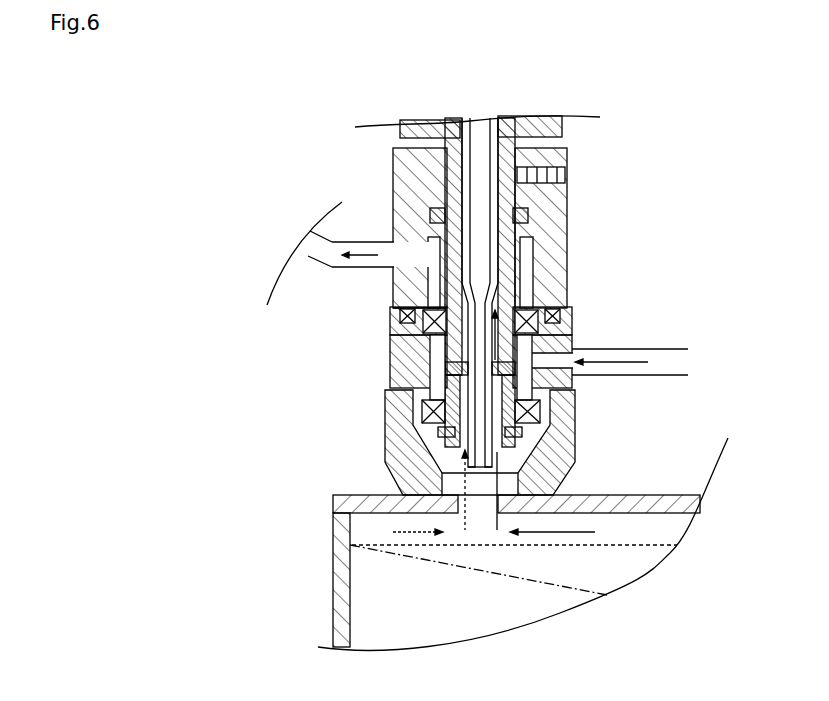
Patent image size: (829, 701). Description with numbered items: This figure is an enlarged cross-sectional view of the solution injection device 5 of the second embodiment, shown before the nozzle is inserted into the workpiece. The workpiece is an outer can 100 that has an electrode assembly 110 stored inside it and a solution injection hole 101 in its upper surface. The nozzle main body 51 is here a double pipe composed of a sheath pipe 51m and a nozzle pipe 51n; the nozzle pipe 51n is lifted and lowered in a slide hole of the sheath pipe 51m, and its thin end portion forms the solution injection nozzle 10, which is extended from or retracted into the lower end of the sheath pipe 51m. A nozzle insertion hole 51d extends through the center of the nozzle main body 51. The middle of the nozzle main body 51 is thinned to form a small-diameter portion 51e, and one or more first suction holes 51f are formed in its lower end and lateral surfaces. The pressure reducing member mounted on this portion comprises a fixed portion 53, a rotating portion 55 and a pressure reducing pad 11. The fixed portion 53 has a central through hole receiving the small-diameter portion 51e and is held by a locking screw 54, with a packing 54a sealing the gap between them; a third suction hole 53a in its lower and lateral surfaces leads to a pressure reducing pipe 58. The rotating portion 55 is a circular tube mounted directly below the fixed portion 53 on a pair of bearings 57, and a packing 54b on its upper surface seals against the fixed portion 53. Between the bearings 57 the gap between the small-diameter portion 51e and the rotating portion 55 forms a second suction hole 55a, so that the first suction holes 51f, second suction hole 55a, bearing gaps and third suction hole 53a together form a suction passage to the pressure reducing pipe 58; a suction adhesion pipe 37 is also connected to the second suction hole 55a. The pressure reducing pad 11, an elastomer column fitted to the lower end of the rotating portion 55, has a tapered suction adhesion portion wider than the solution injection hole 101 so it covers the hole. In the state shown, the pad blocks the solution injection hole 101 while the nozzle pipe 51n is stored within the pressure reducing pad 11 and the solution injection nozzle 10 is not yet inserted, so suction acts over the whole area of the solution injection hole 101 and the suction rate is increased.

The solution injection device 5 is at (623, 287).
The solution injection nozzle 10 is at (545, 452).
The pressure reducing pad 11 is at (568, 432).
The suction adhesion pipe 37 is at (656, 372).
The nozzle main body 51 is at (488, 251).
The nozzle insertion hole 51d is at (462, 204).
The small-diameter portion 51e is at (513, 268).
The first suction holes 51f is at (455, 415).
The sheath pipe 51m is at (457, 120).
The nozzle pipe 51n is at (495, 120).
The fixed portion 53 is at (560, 224).
The third suction hole 53a is at (405, 302).
The locking screw 54 is at (562, 175).
The packing 54a is at (535, 197).
The packing 54b is at (562, 314).
The rotating portion 55 is at (565, 384).
The second suction hole 55a is at (432, 368).
The bearings 57 is at (420, 325).
The pressure reducing pipe 58 is at (348, 253).
The outer can 100 is at (345, 563).
The solution injection hole 101 is at (553, 487).
The electrode assembly 110 is at (398, 608).